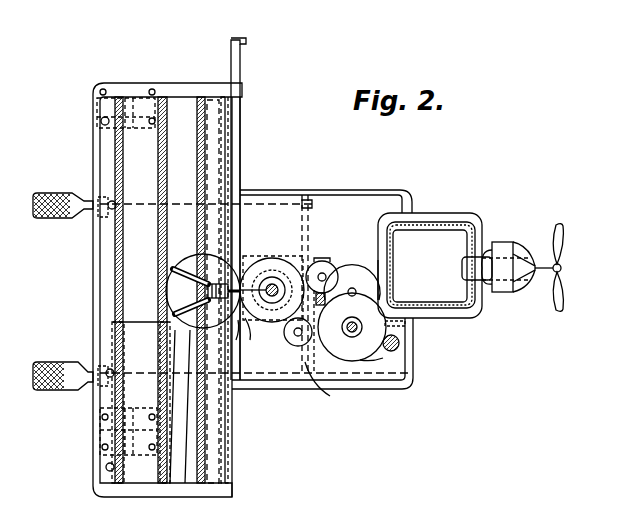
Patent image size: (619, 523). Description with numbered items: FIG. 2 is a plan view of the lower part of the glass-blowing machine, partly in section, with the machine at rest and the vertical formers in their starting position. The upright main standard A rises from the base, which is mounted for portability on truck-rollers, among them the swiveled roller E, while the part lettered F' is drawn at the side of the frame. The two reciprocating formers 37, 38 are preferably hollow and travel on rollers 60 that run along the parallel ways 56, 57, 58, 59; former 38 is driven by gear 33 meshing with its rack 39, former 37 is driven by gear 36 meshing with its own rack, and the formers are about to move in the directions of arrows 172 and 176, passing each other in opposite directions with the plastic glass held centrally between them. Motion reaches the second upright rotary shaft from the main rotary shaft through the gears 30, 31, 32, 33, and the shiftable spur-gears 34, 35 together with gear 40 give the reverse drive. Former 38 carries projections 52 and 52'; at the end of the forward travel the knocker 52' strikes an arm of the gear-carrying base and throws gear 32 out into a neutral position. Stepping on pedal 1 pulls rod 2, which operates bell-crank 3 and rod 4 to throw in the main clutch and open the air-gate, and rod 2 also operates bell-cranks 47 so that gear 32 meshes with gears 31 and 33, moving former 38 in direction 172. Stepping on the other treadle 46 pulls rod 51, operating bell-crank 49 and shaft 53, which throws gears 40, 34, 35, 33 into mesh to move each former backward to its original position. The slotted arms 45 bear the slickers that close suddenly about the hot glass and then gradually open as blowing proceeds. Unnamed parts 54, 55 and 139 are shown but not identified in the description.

The pedal 1 is at (70, 388).
The rod 2 is at (270, 389).
The bell-crank 3 is at (414, 376).
The rod 4 is at (406, 324).
The gear 30 is at (399, 347).
The gear 31 is at (374, 359).
The gear 32 is at (297, 341).
The gear 33 is at (258, 332).
The spur-gear 34 is at (371, 280).
The spur-gear 35 is at (330, 268).
The gear 36 is at (240, 330).
The reciprocating former 37 is at (141, 402).
The reciprocating former 38 is at (215, 175).
The rack 39 is at (250, 255).
The gear 40 is at (352, 327).
The arms 45 is at (178, 268).
The pedal 46 is at (68, 219).
The bell-cranks 47 is at (322, 385).
The bell-crank 49 is at (313, 205).
The rod 51 is at (282, 196).
The projection 52 is at (249, 238).
The projection 52' is at (254, 207).
The shaft 53 is at (312, 228).
The link 54 is at (323, 331).
The cam disc 55 is at (345, 326).
The way 56 is at (123, 293).
The way 57 is at (158, 268).
The way 58 is at (187, 290).
The way 59 is at (230, 410).
The rollers 60 is at (177, 447).
The bolts 139 is at (101, 122).
The arrow 172 is at (254, 138).
The arrow 176 is at (190, 490).
The upright main standard A is at (480, 224).
The truck-roller E is at (512, 268).
The frame F' is at (151, 290).